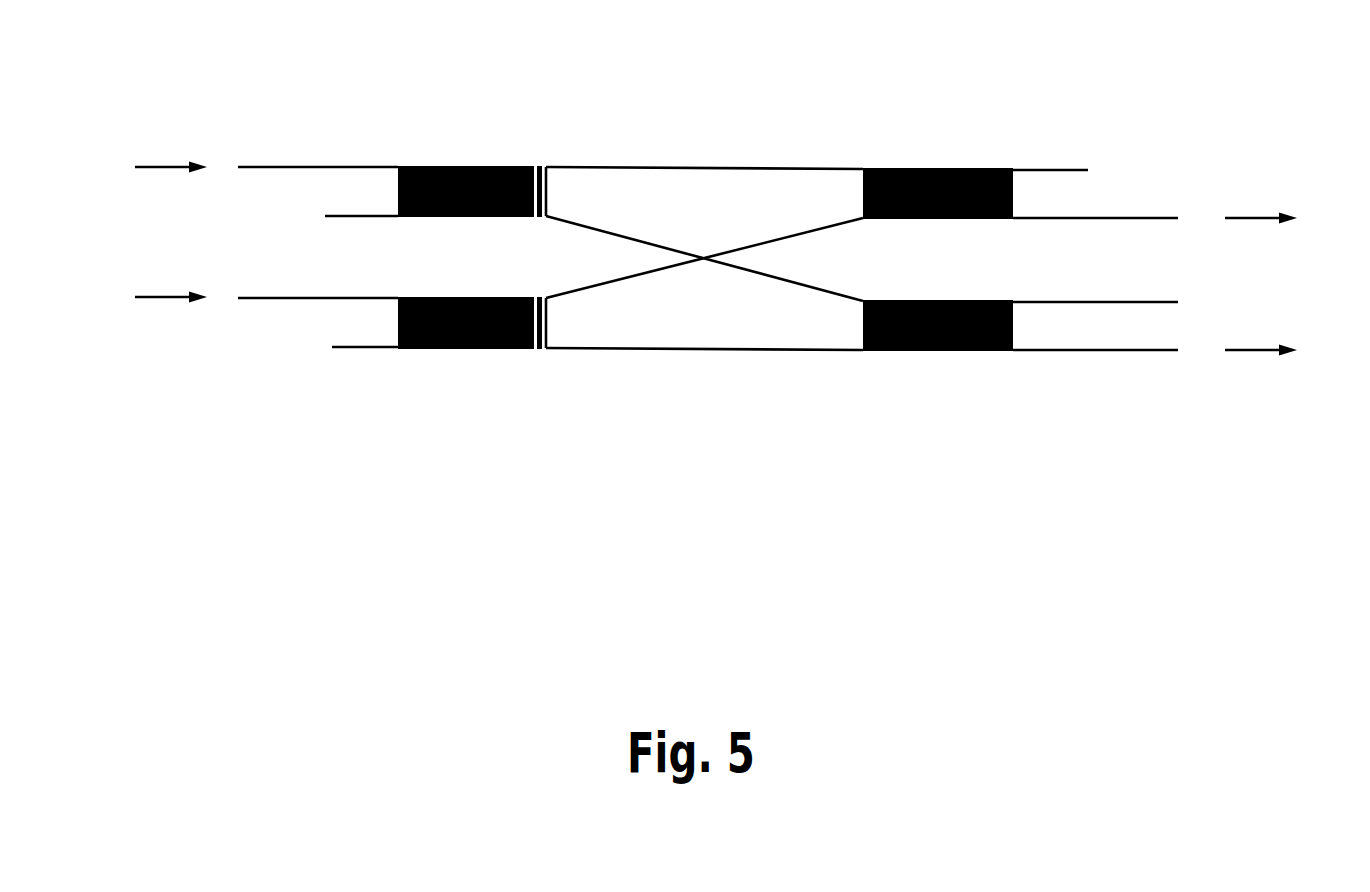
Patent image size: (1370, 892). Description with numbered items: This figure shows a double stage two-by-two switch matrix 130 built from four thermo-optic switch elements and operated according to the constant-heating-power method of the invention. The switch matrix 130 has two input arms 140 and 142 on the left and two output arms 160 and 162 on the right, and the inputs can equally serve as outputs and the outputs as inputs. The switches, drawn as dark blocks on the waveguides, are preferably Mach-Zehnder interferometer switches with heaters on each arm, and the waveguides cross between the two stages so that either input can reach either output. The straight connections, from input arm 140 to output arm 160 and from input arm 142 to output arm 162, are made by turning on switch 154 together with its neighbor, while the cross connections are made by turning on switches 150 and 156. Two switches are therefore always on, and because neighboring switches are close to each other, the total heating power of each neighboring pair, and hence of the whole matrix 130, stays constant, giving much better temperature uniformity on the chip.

The double stage 2×2 switch matrix 130 is at (713, 100).
The input arm 140 is at (163, 166).
The input arm 142 is at (163, 299).
The switch 150 is at (473, 167).
The switch 154 is at (953, 169).
The switch 156 is at (953, 350).
The output arm 160 is at (1252, 217).
The output arm 162 is at (473, 348).